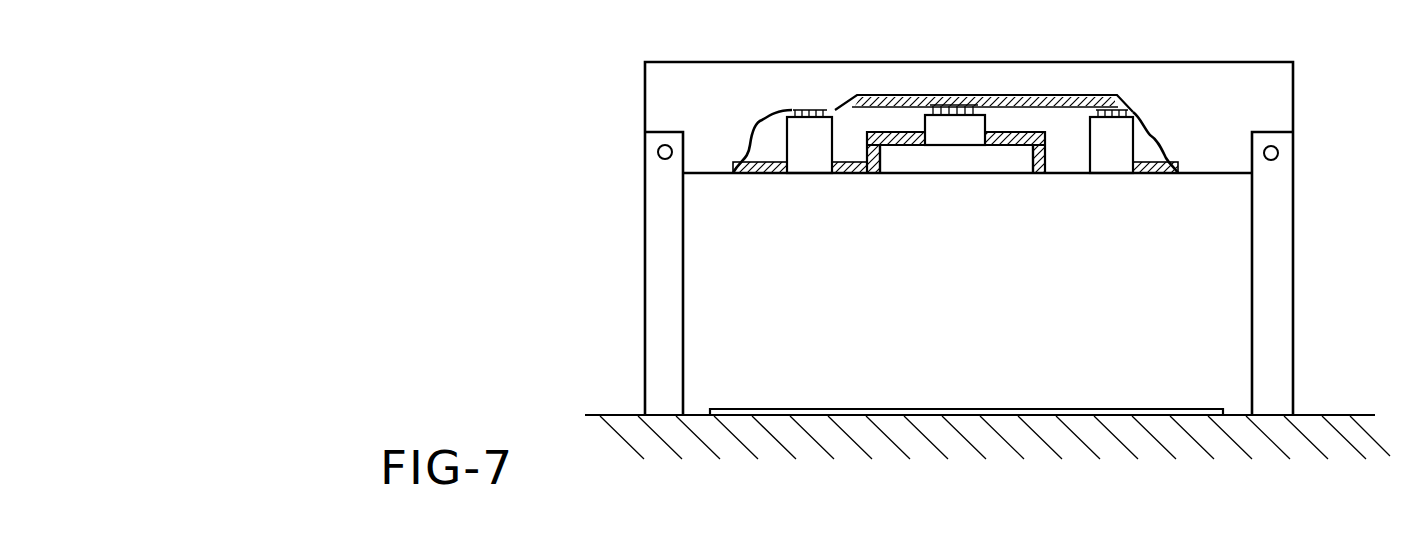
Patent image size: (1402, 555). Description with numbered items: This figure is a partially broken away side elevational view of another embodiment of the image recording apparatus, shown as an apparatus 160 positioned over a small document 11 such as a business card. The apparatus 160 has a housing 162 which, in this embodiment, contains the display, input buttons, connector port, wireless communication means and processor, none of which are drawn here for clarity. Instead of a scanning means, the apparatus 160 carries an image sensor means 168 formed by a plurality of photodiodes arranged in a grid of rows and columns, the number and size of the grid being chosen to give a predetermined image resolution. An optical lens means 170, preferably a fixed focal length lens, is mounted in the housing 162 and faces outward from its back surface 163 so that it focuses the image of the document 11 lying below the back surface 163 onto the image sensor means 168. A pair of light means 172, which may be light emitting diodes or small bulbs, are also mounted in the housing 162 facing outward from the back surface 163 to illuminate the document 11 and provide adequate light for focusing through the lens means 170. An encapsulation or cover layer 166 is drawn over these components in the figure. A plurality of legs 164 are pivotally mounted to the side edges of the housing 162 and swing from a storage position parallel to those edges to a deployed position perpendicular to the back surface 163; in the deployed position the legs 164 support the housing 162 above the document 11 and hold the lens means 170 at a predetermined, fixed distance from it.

The document 11 is at (828, 405).
The apparatus 160 is at (723, 41).
The housing 162 is at (1227, 78).
The back surface 163 is at (846, 174).
The legs 164 is at (645, 232).
The encapsulation layer 166 is at (1032, 100).
The image sensor means 168 is at (960, 125).
The optical lens means 170 is at (987, 167).
The light means 172 is at (803, 127).